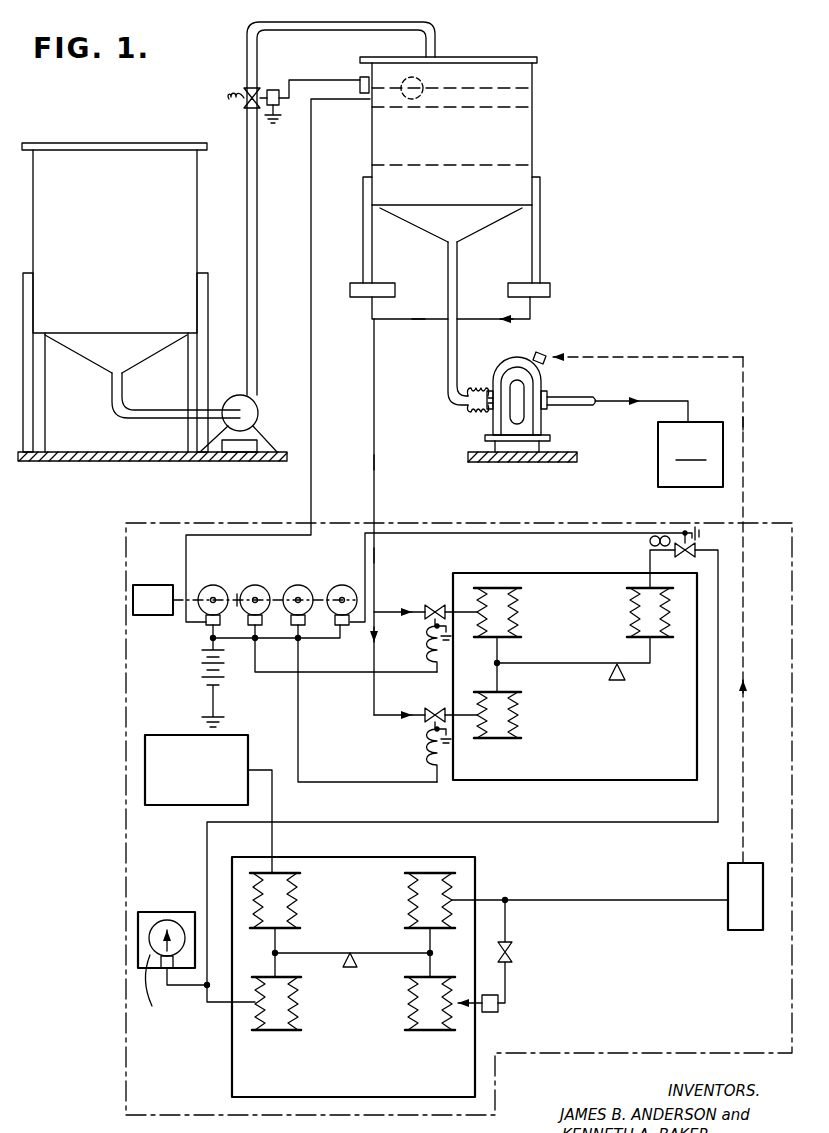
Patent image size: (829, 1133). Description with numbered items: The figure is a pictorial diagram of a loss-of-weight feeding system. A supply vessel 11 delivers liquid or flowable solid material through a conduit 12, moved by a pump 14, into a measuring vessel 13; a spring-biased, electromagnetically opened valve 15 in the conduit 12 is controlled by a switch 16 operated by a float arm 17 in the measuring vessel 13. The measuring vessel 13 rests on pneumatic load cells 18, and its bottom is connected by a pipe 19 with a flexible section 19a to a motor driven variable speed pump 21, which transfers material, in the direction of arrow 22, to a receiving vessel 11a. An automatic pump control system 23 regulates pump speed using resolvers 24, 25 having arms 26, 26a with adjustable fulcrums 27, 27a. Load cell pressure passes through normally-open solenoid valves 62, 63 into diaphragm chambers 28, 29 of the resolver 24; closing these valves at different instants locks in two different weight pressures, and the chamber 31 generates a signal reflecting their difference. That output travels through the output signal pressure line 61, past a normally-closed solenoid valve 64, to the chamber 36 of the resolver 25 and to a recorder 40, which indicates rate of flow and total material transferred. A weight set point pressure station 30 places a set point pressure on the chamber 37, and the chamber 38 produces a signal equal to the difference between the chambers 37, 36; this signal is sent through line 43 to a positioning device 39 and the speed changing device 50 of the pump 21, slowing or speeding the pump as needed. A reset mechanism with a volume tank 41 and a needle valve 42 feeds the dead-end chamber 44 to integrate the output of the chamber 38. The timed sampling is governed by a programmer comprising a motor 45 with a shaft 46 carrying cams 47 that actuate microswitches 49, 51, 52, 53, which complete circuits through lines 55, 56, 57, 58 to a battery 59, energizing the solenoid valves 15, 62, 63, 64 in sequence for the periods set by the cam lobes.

The supply vessel 11 is at (120, 214).
The receiving vessel 11a is at (690, 454).
The conduit 12 is at (254, 211).
The measuring vessel 13 is at (479, 56).
The pump 14 is at (251, 424).
The valve 15 is at (254, 92).
The switch 16 is at (360, 79).
The float arm 17 is at (412, 99).
The pneumatic load cells 18 is at (352, 290).
The pipe 19 is at (458, 297).
The flexible section 19a is at (460, 412).
The variable speed pump 21 is at (498, 366).
The arrow 22 is at (620, 404).
The automatic pump control system 23 is at (750, 520).
The resolver 24 is at (585, 786).
The resolver 25 is at (478, 876).
The arm 26 is at (565, 663).
The arm 26a is at (322, 953).
The fulcrum 27 is at (628, 674).
The fulcrum 27a is at (358, 968).
The diaphragm chamber 28 is at (519, 614).
The diaphragm chamber 29 is at (519, 708).
The weight set point pressure station 30 is at (155, 806).
The diaphragm chamber 31 is at (630, 595).
The diaphragm chamber 36 is at (278, 1032).
The diaphragm chamber 37 is at (298, 879).
The diaphragm chamber 38 is at (408, 879).
The positioning device 39 is at (728, 873).
The recorder 40 is at (189, 918).
The volume tank 41 is at (498, 1010).
The needle valve 42 is at (513, 955).
The line 43 is at (620, 900).
The diaphragm chamber 44 is at (420, 1019).
The motor 45 is at (140, 585).
The shaft 46 is at (237, 595).
The cams 47 is at (212, 585).
The microswitch 49 is at (206, 627).
The speed changing device 50 is at (542, 356).
The microswitch 51 is at (262, 624).
The microswitch 52 is at (305, 624).
The microswitch 53 is at (347, 627).
The line 55 is at (312, 397).
The line 56 is at (358, 674).
The line 57 is at (338, 781).
The line 58 is at (498, 534).
The battery 59 is at (196, 672).
The output signal pressure line 61 is at (358, 822).
The solenoid valve 62 is at (433, 606).
The solenoid valve 63 is at (433, 709).
The solenoid valve 64 is at (692, 548).